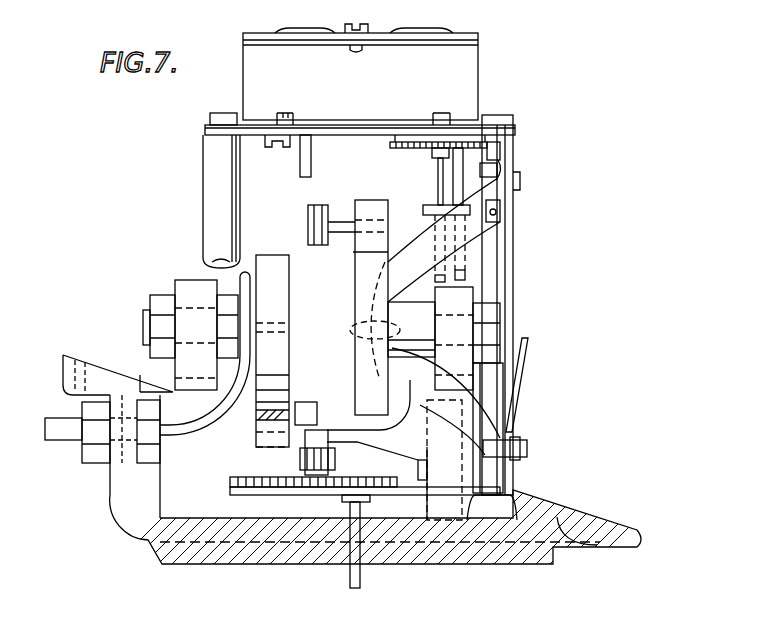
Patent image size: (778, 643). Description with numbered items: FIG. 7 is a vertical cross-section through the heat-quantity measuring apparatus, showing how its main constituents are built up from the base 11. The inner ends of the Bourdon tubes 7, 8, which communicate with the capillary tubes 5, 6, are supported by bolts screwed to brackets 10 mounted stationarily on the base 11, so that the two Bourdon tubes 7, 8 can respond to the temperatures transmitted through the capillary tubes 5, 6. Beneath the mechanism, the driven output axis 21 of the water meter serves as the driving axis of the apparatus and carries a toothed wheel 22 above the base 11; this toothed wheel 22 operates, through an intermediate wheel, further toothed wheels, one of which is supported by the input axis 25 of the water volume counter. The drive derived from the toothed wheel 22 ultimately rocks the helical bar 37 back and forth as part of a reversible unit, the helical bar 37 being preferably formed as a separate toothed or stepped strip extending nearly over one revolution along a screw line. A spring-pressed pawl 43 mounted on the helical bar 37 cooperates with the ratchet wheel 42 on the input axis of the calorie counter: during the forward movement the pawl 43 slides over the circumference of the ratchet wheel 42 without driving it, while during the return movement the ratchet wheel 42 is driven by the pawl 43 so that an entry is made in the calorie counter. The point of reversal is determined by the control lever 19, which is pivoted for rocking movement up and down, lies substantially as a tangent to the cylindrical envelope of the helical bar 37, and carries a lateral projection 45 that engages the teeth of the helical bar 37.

The capillary tube 5 is at (345, 435).
The capillary tube 6 is at (183, 430).
The Bourdon tube 7 is at (365, 270).
The Bourdon tube 8 is at (284, 262).
The bracket 10 is at (195, 292).
The base 11 is at (143, 533).
The control lever 19 is at (527, 356).
The driven output axis of the water meter 21 is at (350, 583).
The toothed wheel 22 is at (362, 482).
The input axis of the counter 25 is at (300, 161).
The helical bar 37 is at (478, 232).
The ratchet wheel 42 is at (392, 146).
The spring-pressed pawl 43 is at (493, 146).
The lateral projection 45 is at (518, 424).